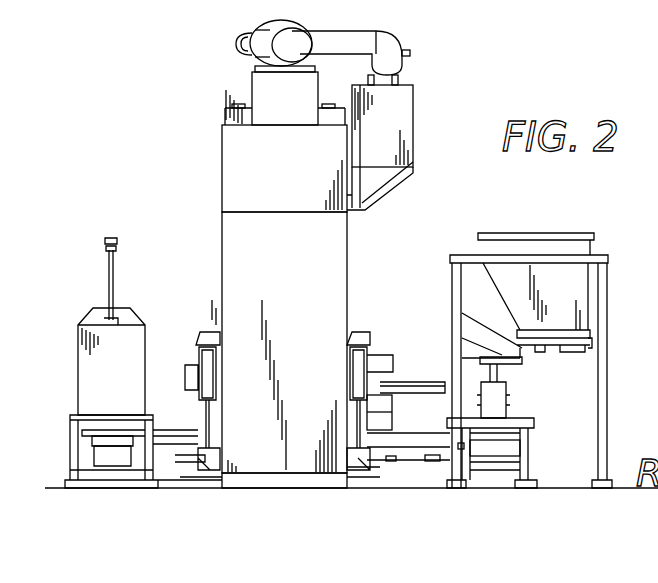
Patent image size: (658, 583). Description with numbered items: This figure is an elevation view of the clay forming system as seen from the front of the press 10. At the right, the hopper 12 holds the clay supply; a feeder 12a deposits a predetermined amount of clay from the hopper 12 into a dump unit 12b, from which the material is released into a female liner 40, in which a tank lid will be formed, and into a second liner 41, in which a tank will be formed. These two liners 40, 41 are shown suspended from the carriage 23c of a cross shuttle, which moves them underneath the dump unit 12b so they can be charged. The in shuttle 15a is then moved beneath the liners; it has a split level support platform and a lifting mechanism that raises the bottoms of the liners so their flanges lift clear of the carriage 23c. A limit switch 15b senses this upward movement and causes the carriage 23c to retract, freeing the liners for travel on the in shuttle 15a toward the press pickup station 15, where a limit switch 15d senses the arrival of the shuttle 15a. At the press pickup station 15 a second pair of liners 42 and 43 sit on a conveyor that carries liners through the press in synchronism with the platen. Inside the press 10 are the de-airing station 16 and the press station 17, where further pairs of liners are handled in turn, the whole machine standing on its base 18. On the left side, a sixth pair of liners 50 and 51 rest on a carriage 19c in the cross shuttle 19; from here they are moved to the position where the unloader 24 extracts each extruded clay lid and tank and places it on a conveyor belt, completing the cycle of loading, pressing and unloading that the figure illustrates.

The press 10 is at (292, 177).
The hopper 12 is at (575, 289).
The feeder 12a is at (598, 348).
The dump unit 12b is at (495, 396).
The press pickup station 15 is at (432, 377).
The in shuttle 15a is at (432, 462).
The limit switch 15b is at (461, 450).
The limit switch 15d is at (391, 463).
The de-airing station 16 is at (331, 392).
The press station 17 is at (256, 416).
The base 18 is at (216, 516).
The cross shuttle 19 is at (60, 397).
The carriage 19c is at (140, 432).
The carriage 23c is at (522, 433).
The unloader 24 is at (125, 376).
The female liner 40 is at (505, 447).
The second liner 41 is at (505, 458).
The liner 42 is at (378, 408).
The liner 43 is at (376, 421).
The liner 50 is at (100, 446).
The liner 51 is at (100, 460).